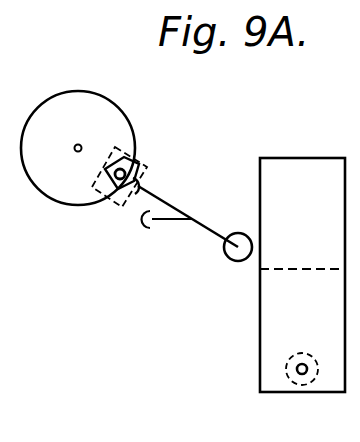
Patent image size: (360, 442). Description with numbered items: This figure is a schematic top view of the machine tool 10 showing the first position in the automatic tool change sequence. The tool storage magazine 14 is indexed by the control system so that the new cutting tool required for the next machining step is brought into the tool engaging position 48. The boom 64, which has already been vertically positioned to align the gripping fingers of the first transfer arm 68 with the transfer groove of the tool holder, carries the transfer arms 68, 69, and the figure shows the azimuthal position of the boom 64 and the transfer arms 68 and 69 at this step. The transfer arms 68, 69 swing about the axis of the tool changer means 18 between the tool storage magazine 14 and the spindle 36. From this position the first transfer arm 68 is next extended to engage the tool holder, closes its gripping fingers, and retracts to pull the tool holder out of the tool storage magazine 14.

The machine tool 10 is at (231, 310).
The tool storage magazine 14 is at (125, 110).
The tool changer means 18 is at (243, 231).
The spindle 36 is at (292, 377).
The tool engaging position 48 is at (146, 159).
The boom 64 is at (207, 227).
The first transfer arm 68 is at (162, 198).
The transfer arm 69 is at (168, 223).